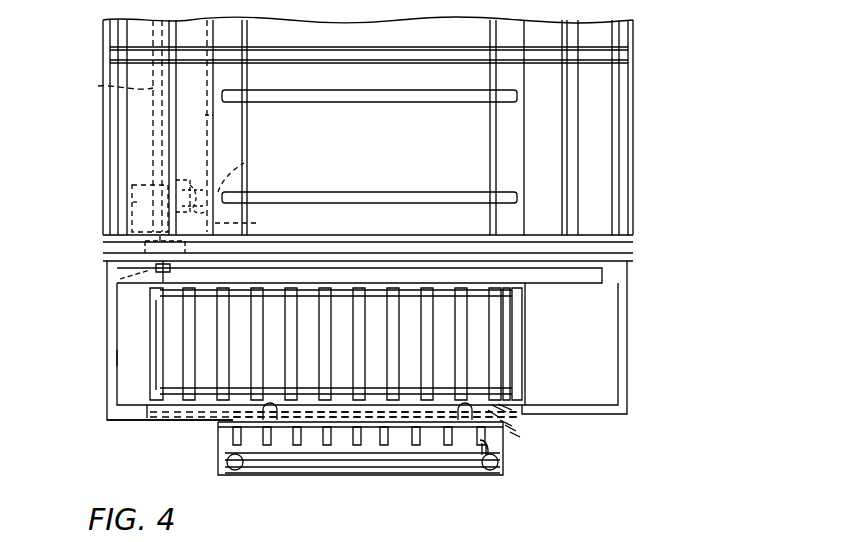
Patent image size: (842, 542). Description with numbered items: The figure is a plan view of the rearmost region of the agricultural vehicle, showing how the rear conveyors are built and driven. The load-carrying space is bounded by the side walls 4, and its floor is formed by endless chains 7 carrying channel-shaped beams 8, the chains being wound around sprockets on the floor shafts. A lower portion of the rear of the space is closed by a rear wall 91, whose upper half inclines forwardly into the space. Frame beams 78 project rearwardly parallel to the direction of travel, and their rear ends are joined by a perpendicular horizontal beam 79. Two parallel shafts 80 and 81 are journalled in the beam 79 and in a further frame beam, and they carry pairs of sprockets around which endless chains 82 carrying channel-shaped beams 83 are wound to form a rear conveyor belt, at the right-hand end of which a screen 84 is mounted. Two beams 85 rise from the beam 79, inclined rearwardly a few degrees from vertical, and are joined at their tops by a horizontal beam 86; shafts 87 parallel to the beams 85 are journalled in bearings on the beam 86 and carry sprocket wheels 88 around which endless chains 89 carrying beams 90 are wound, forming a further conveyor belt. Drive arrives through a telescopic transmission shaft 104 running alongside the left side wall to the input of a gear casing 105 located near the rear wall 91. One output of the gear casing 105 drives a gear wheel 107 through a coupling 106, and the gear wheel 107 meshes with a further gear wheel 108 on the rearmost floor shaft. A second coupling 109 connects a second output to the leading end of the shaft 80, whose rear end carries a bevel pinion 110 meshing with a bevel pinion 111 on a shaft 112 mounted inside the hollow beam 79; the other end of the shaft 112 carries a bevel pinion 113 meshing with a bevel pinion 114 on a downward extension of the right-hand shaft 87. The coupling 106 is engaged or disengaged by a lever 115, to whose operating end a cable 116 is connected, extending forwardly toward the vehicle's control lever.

The side wall 4 is at (634, 105).
The endless chain 7 is at (489, 140).
The beam 8 is at (393, 96).
The frame beam 78 is at (107, 357).
The horizontal beam 79 is at (120, 422).
The shaft 80 is at (160, 364).
The shaft 81 is at (512, 342).
The endless chain 82 is at (270, 295).
The channel-shaped beam 83 is at (292, 368).
The screen 84 is at (628, 363).
The beam 85 is at (268, 400).
The horizontal beam 86 is at (360, 474).
The shaft 87 is at (243, 470).
The sprocket wheel 88 is at (228, 466).
The endless chain 89 is at (290, 447).
The beam 90 is at (446, 450).
The rear wall 91 is at (550, 284).
The telescopic transmission shaft 104 is at (109, 79).
The gear casing 105 is at (131, 200).
The coupling 106 is at (255, 223).
The gear wheel 107 is at (246, 162).
The gear wheel 108 is at (243, 200).
The coupling 109 is at (125, 267).
The bevel pinion 110 is at (150, 418).
The bevel pinion 111 is at (155, 420).
The shaft 112 is at (190, 418).
The bevel pinion 113 is at (522, 425).
The bevel pinion 114 is at (518, 437).
The lever 115 is at (196, 180).
The cable 116 is at (195, 105).